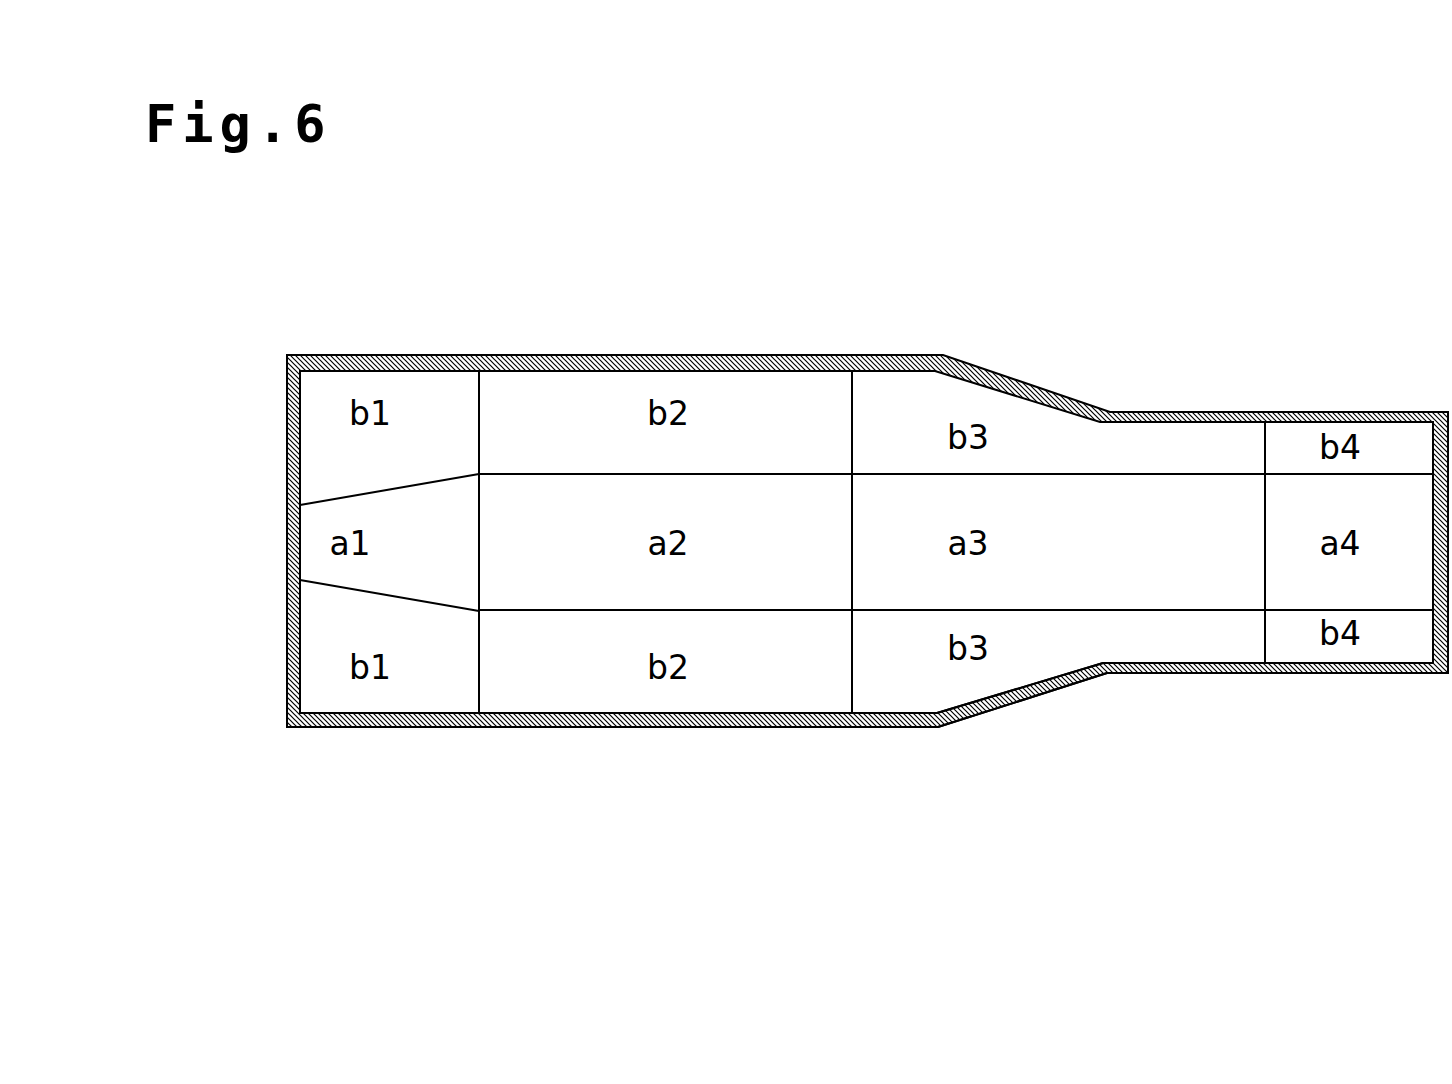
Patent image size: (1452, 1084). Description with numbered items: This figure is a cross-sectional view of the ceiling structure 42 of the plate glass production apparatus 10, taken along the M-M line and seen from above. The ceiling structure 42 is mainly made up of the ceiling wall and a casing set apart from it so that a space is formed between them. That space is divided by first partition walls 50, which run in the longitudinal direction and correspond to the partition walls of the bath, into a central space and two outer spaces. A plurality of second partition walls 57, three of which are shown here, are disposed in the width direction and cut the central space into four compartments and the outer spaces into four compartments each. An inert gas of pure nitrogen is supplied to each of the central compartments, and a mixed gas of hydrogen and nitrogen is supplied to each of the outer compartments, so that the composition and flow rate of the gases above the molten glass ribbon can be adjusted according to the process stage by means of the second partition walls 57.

The battery housing 10 is at (1362, 358).
The ceiling structure 42 is at (978, 718).
The first partition wall 50 is at (582, 473).
The second partition wall 57 is at (479, 387).